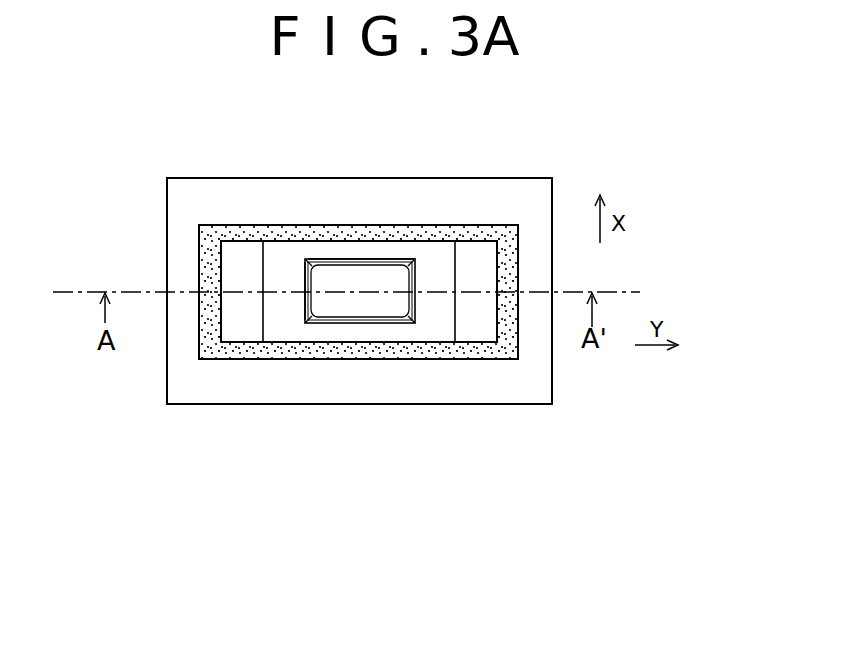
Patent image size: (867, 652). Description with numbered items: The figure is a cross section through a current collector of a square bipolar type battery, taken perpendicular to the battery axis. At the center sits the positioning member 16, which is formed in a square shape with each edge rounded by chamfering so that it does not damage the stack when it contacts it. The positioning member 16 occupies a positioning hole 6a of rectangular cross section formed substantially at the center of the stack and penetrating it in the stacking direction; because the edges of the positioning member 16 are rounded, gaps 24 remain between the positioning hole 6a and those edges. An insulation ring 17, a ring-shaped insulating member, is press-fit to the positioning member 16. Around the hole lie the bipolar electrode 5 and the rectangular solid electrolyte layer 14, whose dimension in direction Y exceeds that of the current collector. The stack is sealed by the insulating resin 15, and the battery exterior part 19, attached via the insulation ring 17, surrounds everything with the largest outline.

The battery exterior part 19 is at (552, 384).
The insulating resin 15 is at (490, 350).
The bipolar electrode 5 is at (270, 314).
The solid electrolyte layer 14 is at (252, 277).
The gap 24 is at (415, 323).
The positioning member 16 is at (332, 302).
The positioning hole 6a is at (305, 300).
The insulation ring 17 is at (413, 259).